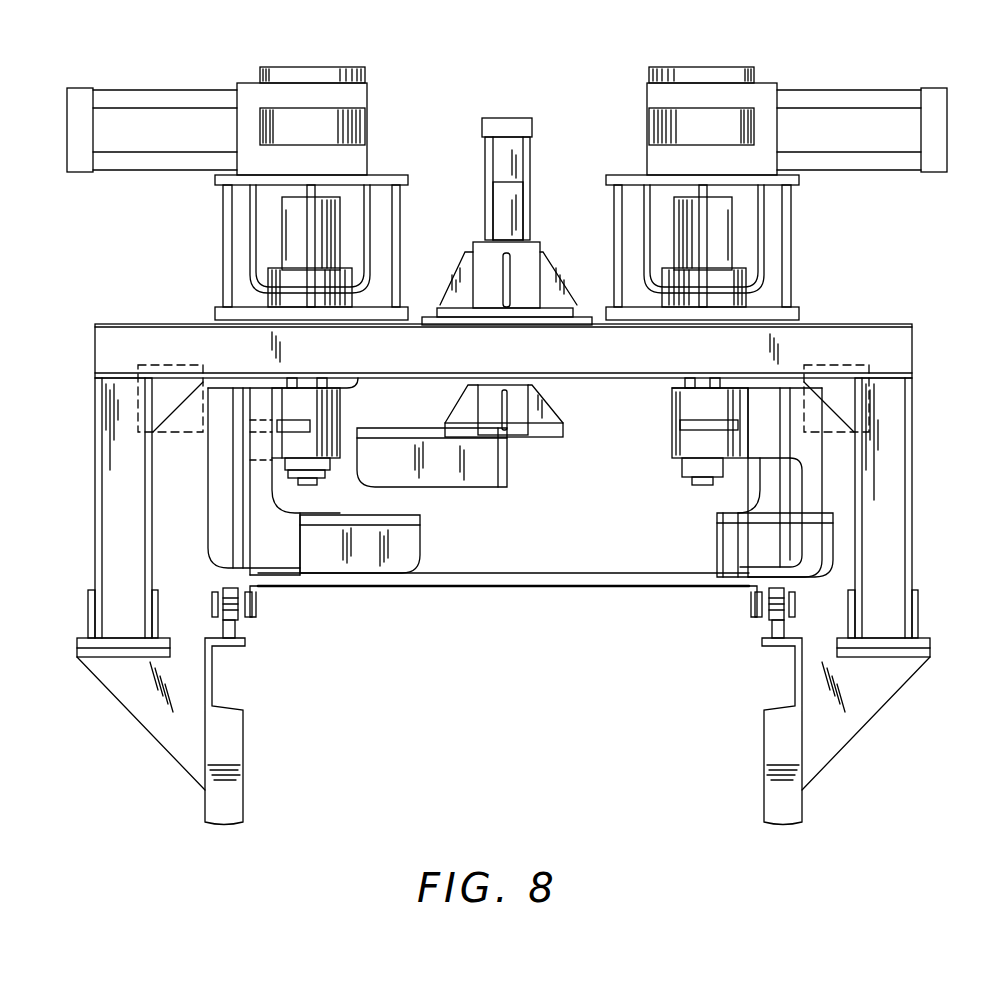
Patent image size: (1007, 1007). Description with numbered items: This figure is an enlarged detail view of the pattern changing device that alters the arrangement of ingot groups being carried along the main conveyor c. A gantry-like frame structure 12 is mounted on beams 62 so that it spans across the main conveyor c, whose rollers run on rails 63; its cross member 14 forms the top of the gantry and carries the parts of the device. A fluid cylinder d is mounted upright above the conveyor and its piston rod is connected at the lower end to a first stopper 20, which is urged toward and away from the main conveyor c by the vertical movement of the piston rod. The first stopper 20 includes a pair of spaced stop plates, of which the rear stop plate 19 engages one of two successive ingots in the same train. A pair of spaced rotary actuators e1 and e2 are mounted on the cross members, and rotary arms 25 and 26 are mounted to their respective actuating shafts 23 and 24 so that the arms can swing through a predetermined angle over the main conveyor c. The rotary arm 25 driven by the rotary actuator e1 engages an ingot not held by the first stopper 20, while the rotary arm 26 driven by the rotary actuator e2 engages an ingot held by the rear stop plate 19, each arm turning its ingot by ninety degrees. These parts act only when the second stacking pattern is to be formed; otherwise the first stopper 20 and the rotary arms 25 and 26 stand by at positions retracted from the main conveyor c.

The gantry-like frame structure 12 is at (95, 487).
The cross member 14 is at (852, 323).
The rear stop plate 19 is at (480, 487).
The first stopper 20 is at (553, 436).
The actuating shaft 23 is at (672, 388).
The actuating shaft 24 is at (330, 385).
The rotary arm 25 is at (727, 547).
The rotary arm 26 is at (422, 560).
The beam 62 is at (215, 805).
The rail 63 is at (233, 628).
The main conveyor c is at (567, 578).
The fluid cylinder d is at (530, 88).
The rotary actuator e1 is at (722, 58).
The rotary actuator e2 is at (260, 55).